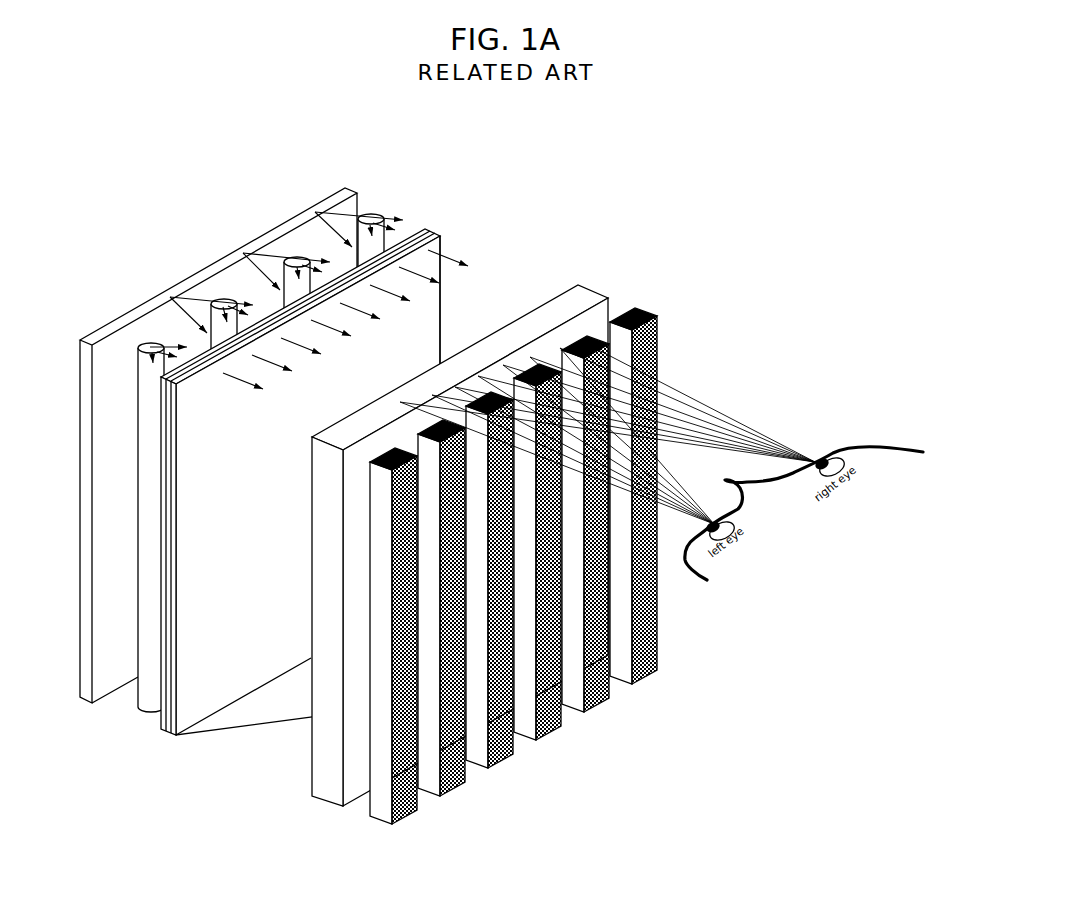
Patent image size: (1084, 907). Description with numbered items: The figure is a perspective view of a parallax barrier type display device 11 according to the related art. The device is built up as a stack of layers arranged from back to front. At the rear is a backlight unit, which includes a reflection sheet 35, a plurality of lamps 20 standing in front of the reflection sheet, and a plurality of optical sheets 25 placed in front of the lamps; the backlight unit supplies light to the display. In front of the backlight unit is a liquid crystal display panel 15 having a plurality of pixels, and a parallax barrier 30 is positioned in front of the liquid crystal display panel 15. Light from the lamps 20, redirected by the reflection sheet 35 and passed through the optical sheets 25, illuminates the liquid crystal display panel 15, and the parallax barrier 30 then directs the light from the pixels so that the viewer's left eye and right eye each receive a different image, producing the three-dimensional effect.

The parallax barrier type display device 11 is at (394, 457).
The liquid crystal display panel 15 is at (595, 284).
The lamps 20 is at (372, 213).
The optical sheets 25 is at (441, 217).
The parallax barrier 30 is at (657, 314).
The reflection sheet 35 is at (344, 187).